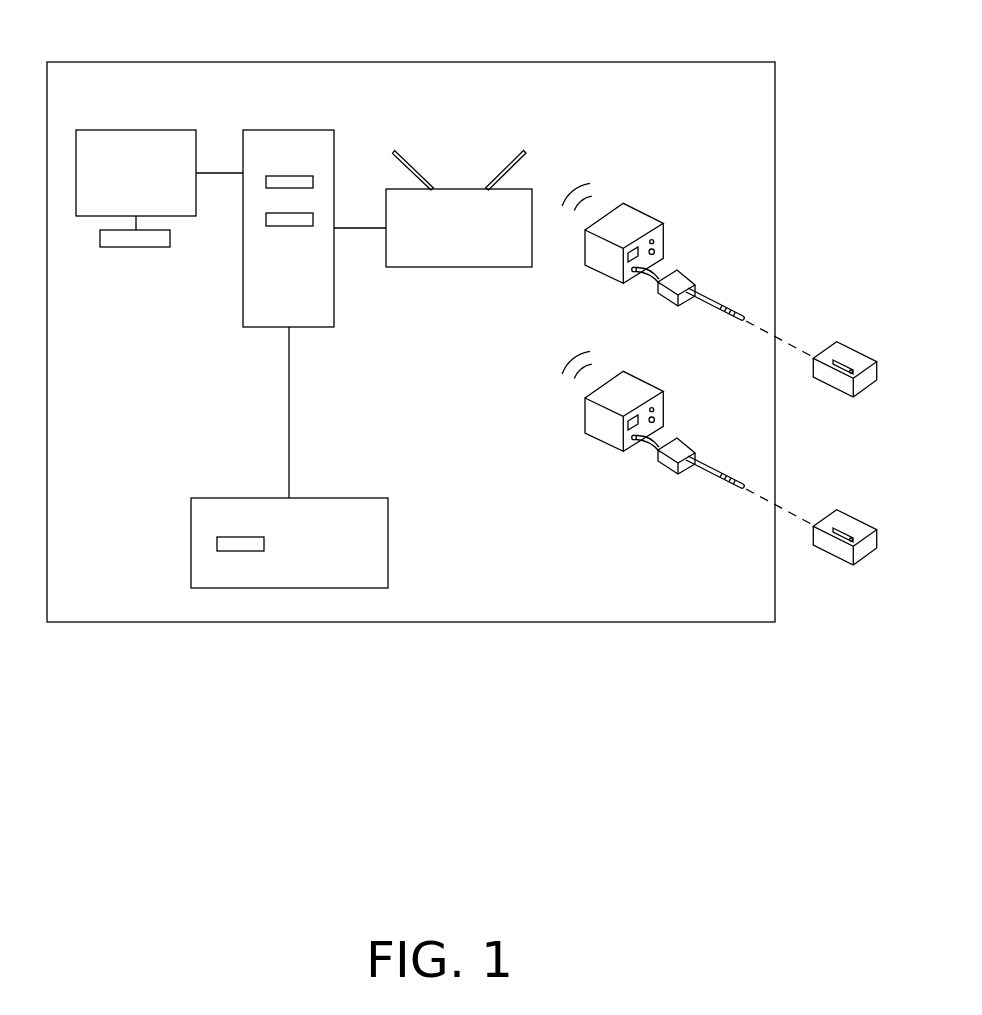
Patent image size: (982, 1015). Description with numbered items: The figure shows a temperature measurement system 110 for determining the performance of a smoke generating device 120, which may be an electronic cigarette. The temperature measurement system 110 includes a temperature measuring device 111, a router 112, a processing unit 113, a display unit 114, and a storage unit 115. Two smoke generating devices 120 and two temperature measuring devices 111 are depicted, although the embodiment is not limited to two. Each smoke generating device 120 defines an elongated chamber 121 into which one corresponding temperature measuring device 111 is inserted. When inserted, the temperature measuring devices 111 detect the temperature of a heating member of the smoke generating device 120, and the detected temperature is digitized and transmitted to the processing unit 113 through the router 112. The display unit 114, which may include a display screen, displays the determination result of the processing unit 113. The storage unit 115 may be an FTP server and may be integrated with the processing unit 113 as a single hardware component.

The temperature measurement system 110 is at (382, 62).
The temperature measuring device 111 is at (680, 211).
The router 112 is at (467, 149).
The processing unit 113 is at (288, 121).
The display unit 114 is at (128, 121).
The storage unit 115 is at (335, 497).
The smoke generating device 120 is at (857, 358).
The elongated chamber 121 is at (842, 371).